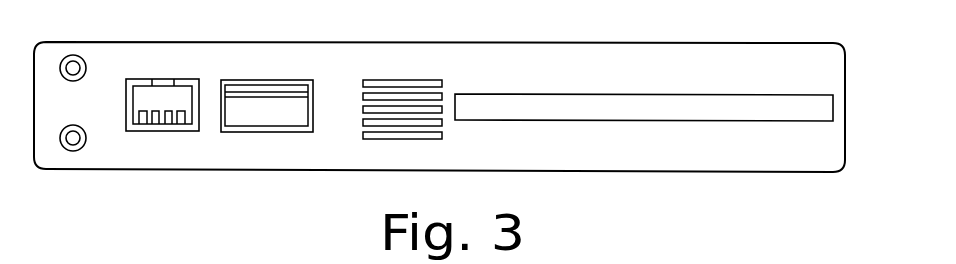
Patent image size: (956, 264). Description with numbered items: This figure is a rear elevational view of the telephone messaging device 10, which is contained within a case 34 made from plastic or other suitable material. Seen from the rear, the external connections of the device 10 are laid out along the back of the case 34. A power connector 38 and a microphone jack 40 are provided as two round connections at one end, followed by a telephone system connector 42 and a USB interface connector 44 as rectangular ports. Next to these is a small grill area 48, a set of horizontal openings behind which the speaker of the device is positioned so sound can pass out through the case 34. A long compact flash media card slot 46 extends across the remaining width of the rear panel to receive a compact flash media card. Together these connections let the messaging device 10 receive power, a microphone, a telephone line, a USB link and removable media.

The telephone messaging device 10 is at (222, 190).
The case 34 is at (600, 172).
The power connector 38 is at (67, 55).
The microphone jack 40 is at (72, 151).
The telephone system connector 42 is at (145, 79).
The USB interface connector 44 is at (258, 80).
The compact flash media card slot 46 is at (594, 94).
The grill area 48 is at (391, 80).